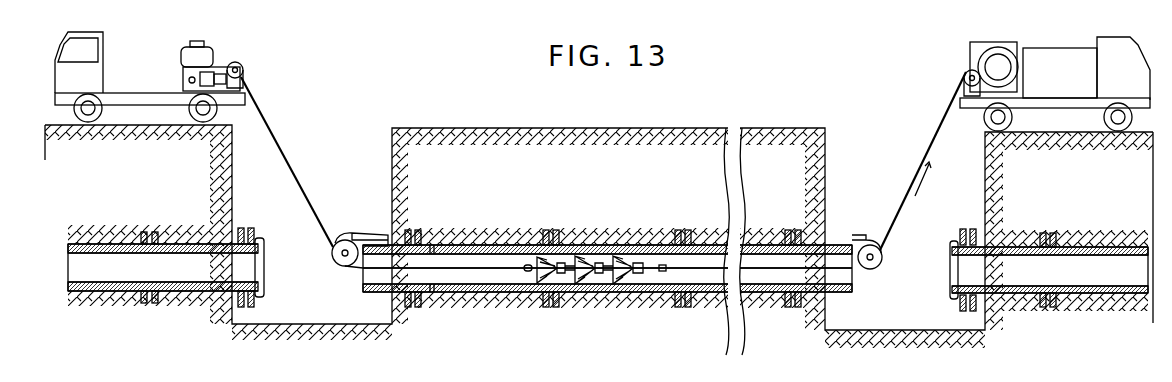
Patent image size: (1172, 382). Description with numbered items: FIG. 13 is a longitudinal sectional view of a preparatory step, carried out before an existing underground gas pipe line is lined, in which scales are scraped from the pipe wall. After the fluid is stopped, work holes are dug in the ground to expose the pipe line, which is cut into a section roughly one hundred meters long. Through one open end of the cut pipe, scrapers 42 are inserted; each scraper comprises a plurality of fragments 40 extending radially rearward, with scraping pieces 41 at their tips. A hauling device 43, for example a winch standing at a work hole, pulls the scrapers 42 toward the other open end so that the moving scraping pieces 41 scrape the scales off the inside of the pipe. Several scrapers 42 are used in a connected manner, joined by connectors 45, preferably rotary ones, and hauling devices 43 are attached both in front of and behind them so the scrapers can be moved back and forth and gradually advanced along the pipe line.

The fragments 40 is at (569, 292).
The scraping pieces 41 is at (517, 244).
The scrapers 42 is at (622, 292).
The hauling device 43 is at (243, 70).
The connecting link between tools 45 is at (598, 244).